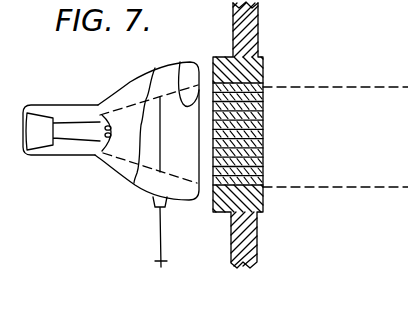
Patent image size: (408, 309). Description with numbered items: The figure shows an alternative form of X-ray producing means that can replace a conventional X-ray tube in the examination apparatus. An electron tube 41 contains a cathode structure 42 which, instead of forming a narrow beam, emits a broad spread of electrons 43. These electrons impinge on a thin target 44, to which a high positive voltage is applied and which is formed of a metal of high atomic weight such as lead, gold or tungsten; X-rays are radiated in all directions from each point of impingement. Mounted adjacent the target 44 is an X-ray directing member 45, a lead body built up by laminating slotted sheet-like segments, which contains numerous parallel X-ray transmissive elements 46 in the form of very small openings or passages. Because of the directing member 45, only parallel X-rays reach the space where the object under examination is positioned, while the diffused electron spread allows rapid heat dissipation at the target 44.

The electron tube 41 is at (120, 89).
The cathode structure 42 is at (100, 157).
The broad spread of electrons 43 is at (159, 128).
The thin target 44 is at (180, 62).
The X-ray directing member 45 is at (263, 72).
The X-ray transmissive elements 46 is at (262, 156).